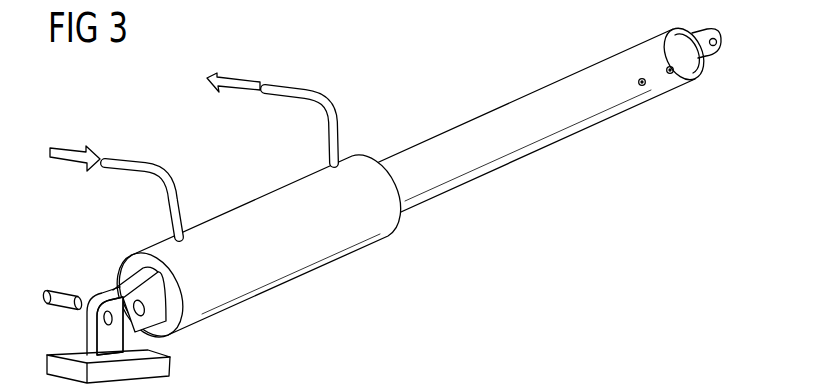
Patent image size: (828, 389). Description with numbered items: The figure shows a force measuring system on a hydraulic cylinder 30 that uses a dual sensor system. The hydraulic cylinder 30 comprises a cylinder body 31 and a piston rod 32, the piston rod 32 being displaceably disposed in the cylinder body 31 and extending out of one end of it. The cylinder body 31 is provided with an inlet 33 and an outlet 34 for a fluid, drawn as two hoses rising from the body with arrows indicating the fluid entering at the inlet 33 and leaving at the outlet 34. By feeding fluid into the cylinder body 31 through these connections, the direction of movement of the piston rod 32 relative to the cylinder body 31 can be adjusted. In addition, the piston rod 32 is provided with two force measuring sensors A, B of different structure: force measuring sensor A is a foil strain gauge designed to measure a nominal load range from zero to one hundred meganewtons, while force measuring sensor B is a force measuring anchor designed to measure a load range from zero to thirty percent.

The hydraulic cylinder 30 is at (489, 64).
The cylinder body 31 is at (286, 252).
The piston rod 32 is at (540, 125).
The inlet 33 is at (191, 196).
The outlet 34 is at (339, 114).
The force measuring sensor A is at (646, 87).
The force measuring sensor B is at (673, 76).